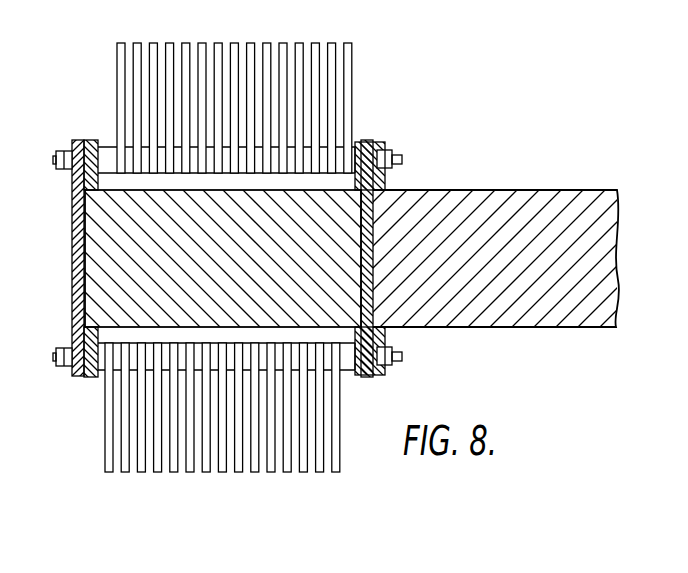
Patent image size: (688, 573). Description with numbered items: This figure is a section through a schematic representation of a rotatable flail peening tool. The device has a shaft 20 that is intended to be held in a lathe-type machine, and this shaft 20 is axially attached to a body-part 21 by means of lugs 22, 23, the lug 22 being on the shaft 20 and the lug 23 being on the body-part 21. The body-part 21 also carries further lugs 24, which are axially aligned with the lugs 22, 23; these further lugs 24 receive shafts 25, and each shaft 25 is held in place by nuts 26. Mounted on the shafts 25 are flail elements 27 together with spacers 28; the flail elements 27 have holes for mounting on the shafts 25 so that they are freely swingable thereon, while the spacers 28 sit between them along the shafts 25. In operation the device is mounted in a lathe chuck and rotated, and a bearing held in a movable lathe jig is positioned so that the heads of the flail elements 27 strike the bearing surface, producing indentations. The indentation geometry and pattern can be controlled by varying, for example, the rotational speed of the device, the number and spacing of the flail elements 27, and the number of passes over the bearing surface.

The shaft 20 is at (540, 204).
The body-part 21 is at (108, 235).
The lug 22 is at (380, 143).
The lug 23 is at (365, 142).
The lug 24 is at (88, 141).
The shaft 25 is at (386, 150).
The nut 26 is at (392, 171).
The flail element 27 is at (283, 44).
The spacer 28 is at (110, 146).